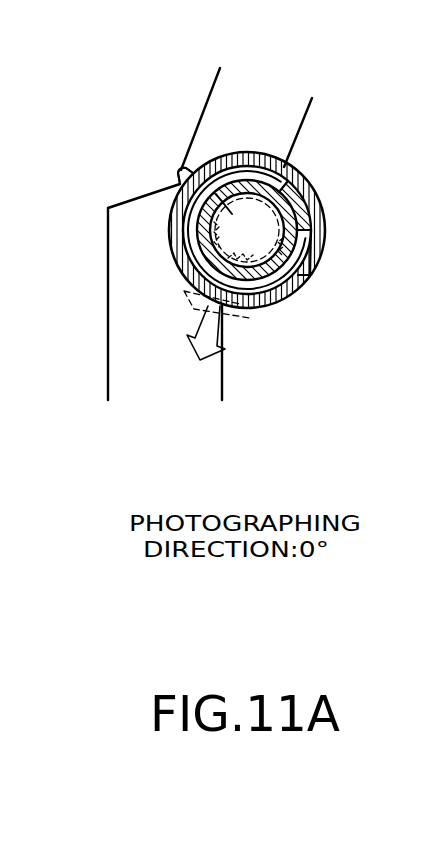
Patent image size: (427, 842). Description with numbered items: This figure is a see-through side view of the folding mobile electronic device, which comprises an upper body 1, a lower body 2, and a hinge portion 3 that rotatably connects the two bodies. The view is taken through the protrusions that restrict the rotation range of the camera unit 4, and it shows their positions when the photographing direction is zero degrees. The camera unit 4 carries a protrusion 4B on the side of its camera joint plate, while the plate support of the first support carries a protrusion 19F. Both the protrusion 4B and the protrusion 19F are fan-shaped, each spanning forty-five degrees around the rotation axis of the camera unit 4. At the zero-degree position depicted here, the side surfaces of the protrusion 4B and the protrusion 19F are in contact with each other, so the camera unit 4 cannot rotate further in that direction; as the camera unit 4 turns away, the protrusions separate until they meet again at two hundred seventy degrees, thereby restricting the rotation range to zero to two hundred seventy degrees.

The upper body 1 is at (232, 96).
The lower body 2 is at (129, 304).
The hinge portion 3 is at (168, 237).
The camera unit 4 is at (183, 171).
The protrusion 4B is at (318, 186).
The protrusion 19F is at (300, 264).